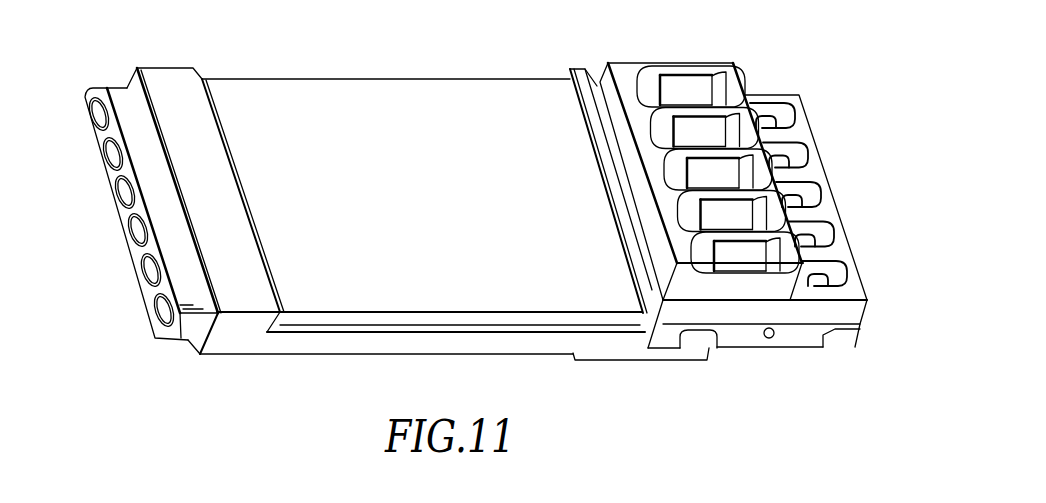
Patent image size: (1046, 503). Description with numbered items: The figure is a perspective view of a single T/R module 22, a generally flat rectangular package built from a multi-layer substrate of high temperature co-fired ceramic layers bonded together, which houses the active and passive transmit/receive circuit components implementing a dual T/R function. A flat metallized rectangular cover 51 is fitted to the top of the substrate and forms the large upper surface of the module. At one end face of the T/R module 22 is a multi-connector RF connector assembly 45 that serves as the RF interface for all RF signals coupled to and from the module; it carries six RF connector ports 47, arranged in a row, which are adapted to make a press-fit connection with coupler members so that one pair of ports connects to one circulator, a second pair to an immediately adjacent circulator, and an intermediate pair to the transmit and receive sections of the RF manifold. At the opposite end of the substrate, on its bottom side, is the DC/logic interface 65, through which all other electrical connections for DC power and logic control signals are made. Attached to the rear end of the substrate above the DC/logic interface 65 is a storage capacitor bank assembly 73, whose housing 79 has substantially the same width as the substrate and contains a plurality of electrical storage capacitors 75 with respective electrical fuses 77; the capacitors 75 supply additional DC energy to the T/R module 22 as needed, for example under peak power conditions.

The T/R module 22 is at (463, 198).
The multi-connector RF connector assembly 45 is at (121, 92).
The RF connector ports 47 is at (139, 233).
The flat metallized rectangular cover 51 is at (323, 90).
The DC/logic interface 65 is at (650, 368).
The storage capacitor bank assembly 73 is at (787, 63).
The electrical storage capacitors 75 is at (690, 87).
The electrical fuses 77 is at (800, 158).
The housing 79 is at (832, 213).